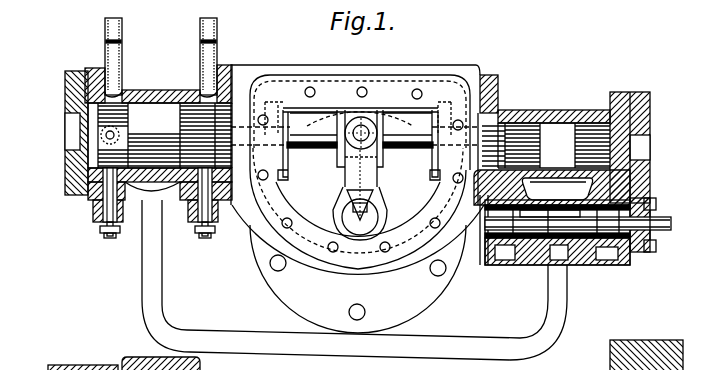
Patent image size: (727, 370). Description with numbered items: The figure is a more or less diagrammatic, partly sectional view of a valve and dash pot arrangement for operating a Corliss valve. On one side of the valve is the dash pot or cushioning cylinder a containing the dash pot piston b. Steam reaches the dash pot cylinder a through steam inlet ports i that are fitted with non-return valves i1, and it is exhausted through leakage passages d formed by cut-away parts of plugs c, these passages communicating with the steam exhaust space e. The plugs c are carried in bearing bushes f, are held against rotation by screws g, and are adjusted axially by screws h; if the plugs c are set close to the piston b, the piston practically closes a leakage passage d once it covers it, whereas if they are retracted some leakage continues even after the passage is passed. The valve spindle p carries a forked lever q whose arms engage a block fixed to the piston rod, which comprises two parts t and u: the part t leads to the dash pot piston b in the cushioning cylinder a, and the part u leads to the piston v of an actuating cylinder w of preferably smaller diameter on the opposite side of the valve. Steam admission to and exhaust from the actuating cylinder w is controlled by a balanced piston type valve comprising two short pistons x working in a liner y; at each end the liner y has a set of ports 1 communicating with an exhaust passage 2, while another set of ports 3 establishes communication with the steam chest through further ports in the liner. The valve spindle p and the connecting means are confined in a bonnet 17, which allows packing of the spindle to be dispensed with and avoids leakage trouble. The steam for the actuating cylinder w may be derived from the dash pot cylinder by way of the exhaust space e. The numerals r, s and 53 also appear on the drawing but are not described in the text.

The dash pot cylinder a is at (152, 89).
The dash pot piston b is at (165, 135).
The plugs c is at (100, 192).
The leakage passages d is at (144, 222).
The steam exhaust space e is at (37, 192).
The bearing bushes f is at (97, 224).
The screws for preventing rotation g is at (118, 232).
The screws for adjusting axial position h is at (108, 237).
The steam inlet ports i is at (105, 135).
The non-return valves i1 is at (113, 39).
The valve spindle p is at (357, 270).
The lever q is at (378, 207).
The crosshead r is at (382, 160).
The crosshead pin s is at (375, 116).
The piston rod part t is at (318, 150).
The piston rod part u is at (418, 134).
The actuating cylinder piston v is at (546, 145).
The actuating cylinder w is at (542, 118).
The short pistons x is at (525, 262).
The liner y is at (558, 266).
The ports 1 is at (486, 254).
The exhaust passage 2 is at (500, 266).
The ports 3 is at (541, 266).
The bonnet 17 is at (345, 203).
The passage 53 is at (558, 191).